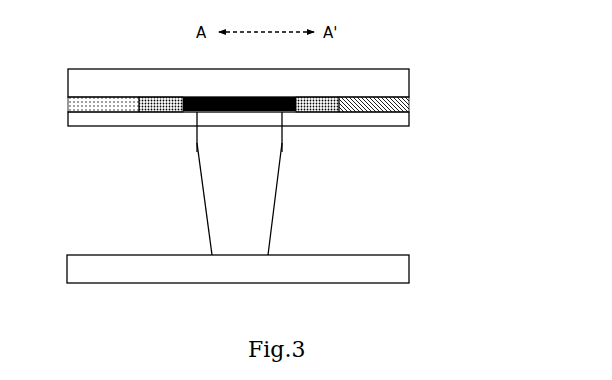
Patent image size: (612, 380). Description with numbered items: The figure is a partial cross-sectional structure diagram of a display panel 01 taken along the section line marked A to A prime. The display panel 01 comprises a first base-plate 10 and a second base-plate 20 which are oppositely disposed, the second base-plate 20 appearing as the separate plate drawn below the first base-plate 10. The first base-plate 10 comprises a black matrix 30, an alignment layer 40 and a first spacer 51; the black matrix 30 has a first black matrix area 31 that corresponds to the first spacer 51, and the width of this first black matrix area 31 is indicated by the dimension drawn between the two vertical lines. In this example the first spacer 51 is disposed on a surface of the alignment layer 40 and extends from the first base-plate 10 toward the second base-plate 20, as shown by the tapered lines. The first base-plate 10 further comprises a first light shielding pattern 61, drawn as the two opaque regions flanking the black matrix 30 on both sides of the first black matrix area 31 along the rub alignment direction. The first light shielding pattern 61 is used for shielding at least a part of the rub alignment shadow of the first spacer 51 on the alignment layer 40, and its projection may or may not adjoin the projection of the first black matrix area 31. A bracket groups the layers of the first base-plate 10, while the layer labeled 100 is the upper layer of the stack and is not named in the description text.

The display panel 01 is at (91, 44).
The first base-plate 10 is at (452, 70).
The substrate 100 is at (395, 82).
The alignment layer 40 is at (395, 119).
The black matrix 30 is at (258, 97).
The first black matrix area 31 is at (282, 141).
The first light shielding pattern 61 is at (166, 105).
The first spacer 51 is at (267, 191).
The second base-plate 20 is at (395, 268).